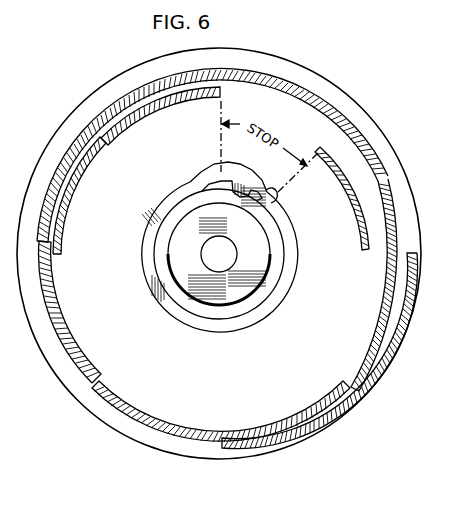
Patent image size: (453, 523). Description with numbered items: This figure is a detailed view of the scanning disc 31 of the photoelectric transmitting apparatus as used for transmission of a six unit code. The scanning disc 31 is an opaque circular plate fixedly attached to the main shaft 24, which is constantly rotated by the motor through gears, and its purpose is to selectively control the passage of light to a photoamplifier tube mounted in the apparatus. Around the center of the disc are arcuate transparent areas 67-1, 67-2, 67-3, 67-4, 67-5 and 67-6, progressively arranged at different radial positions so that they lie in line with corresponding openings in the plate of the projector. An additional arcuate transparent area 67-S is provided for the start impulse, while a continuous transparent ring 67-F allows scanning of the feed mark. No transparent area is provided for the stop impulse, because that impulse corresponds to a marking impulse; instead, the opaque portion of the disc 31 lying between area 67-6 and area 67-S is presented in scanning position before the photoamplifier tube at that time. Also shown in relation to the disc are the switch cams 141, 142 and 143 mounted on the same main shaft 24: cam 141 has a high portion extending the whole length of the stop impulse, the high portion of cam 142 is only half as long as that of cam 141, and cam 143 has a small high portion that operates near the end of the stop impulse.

The scanning disc 31 is at (303, 73).
The main shaft 24 is at (219, 254).
The continuous transparent ring 67-F is at (272, 86).
The arcuate transparent area for the start impulse 67-S is at (353, 214).
The arcuate transparent area 67-1 is at (356, 366).
The arcuate transparent area 67-2 is at (258, 437).
The arcuate transparent area 67-3 is at (152, 413).
The arcuate transparent area 67-4 is at (65, 316).
The arcuate transparent area 67-5 is at (101, 140).
The arcuate transparent area 67-6 is at (151, 110).
The switch cam 141 is at (233, 176).
The switch cam 142 is at (243, 190).
The switch cam 143 is at (252, 211).